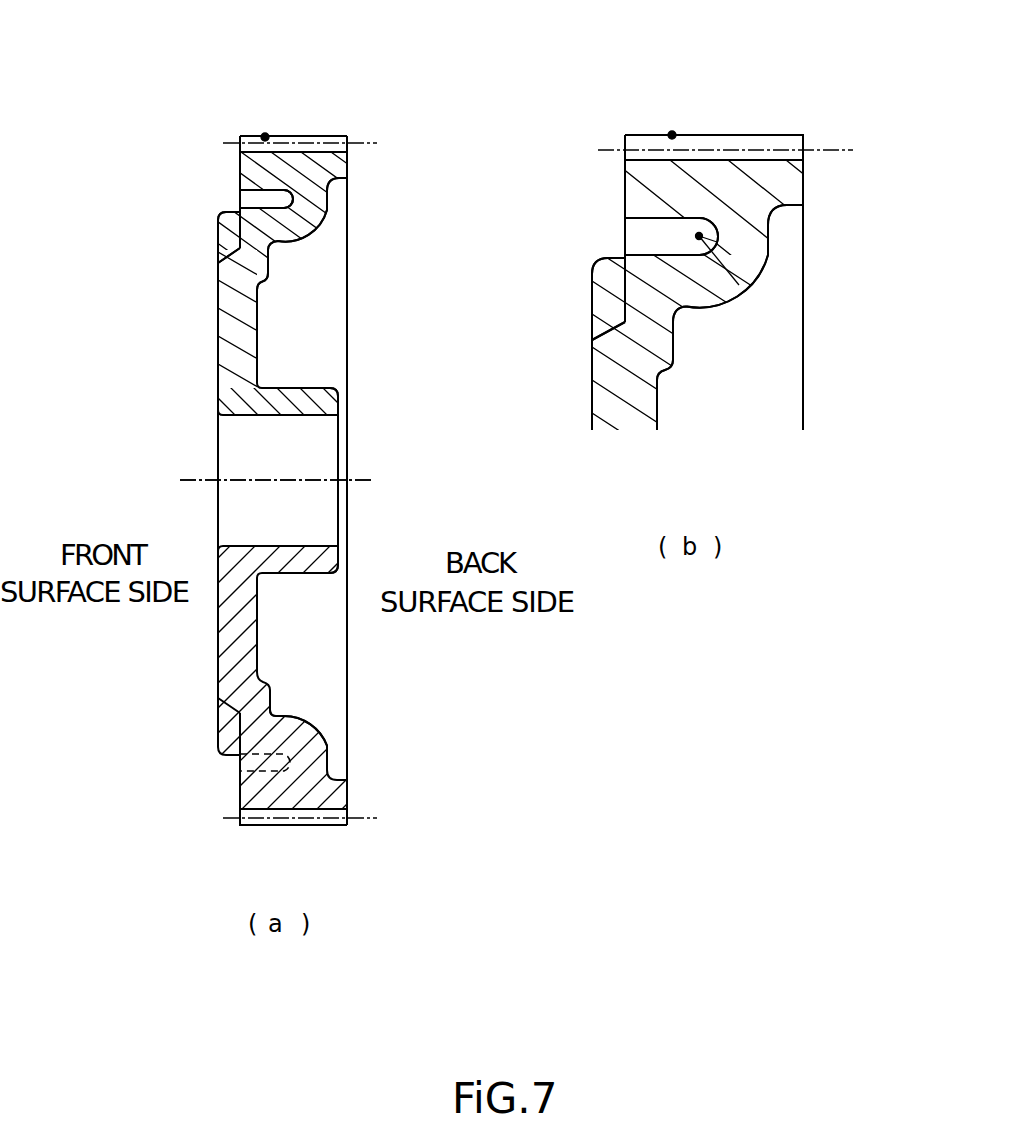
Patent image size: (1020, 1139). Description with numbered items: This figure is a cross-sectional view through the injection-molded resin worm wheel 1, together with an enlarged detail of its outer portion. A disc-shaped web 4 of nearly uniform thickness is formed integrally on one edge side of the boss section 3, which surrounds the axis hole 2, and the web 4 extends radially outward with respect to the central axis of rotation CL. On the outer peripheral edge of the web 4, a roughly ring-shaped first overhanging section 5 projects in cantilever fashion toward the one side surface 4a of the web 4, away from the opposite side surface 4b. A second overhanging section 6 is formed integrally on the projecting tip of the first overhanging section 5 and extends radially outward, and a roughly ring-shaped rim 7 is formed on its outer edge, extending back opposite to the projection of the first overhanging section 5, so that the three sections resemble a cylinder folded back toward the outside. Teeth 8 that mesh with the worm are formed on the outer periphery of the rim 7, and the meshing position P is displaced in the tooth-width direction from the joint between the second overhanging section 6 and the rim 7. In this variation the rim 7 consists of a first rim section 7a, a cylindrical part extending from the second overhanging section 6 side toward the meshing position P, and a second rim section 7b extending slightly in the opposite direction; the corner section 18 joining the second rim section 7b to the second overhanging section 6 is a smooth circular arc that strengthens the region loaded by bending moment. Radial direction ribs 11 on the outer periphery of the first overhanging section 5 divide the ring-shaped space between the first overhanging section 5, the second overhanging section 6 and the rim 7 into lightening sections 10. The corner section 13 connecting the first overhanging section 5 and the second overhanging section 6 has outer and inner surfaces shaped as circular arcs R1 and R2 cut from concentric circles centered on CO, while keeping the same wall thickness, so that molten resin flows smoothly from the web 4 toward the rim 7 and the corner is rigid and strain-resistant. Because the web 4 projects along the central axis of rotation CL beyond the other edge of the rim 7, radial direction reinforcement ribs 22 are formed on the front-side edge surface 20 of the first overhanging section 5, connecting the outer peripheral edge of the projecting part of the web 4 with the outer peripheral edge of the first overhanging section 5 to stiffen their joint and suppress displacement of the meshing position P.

The worm wheel 1 is at (350, 121).
The lower flange 2 is at (320, 545).
The boss section 3 is at (317, 404).
The web 4 is at (248, 320).
The one side surface of the web 4a is at (258, 354).
The outer peripheral surface 4b is at (218, 379).
The first overhanging section 5 is at (306, 222).
The second overhanging section 6 is at (332, 212).
The rim 7 is at (317, 828).
The first rim section 7a is at (240, 173).
The second rim section 7b is at (338, 163).
The teeth 8 is at (312, 136).
The small spaces (lightening sections) 10 is at (284, 195).
The radial direction ribs 11 is at (247, 200).
The corner section 13 is at (330, 233).
The corner section 18 is at (338, 184).
The edge surface of the first overhanging section 20 is at (223, 214).
The radial direction reinforcement ribs 22 is at (224, 258).
The meshing position P is at (265, 136).
The central axis of rotation CL is at (197, 473).
The center of the concentric circles CO is at (699, 236).
The circular arc R1 is at (718, 243).
The circular arc R2 is at (743, 290).